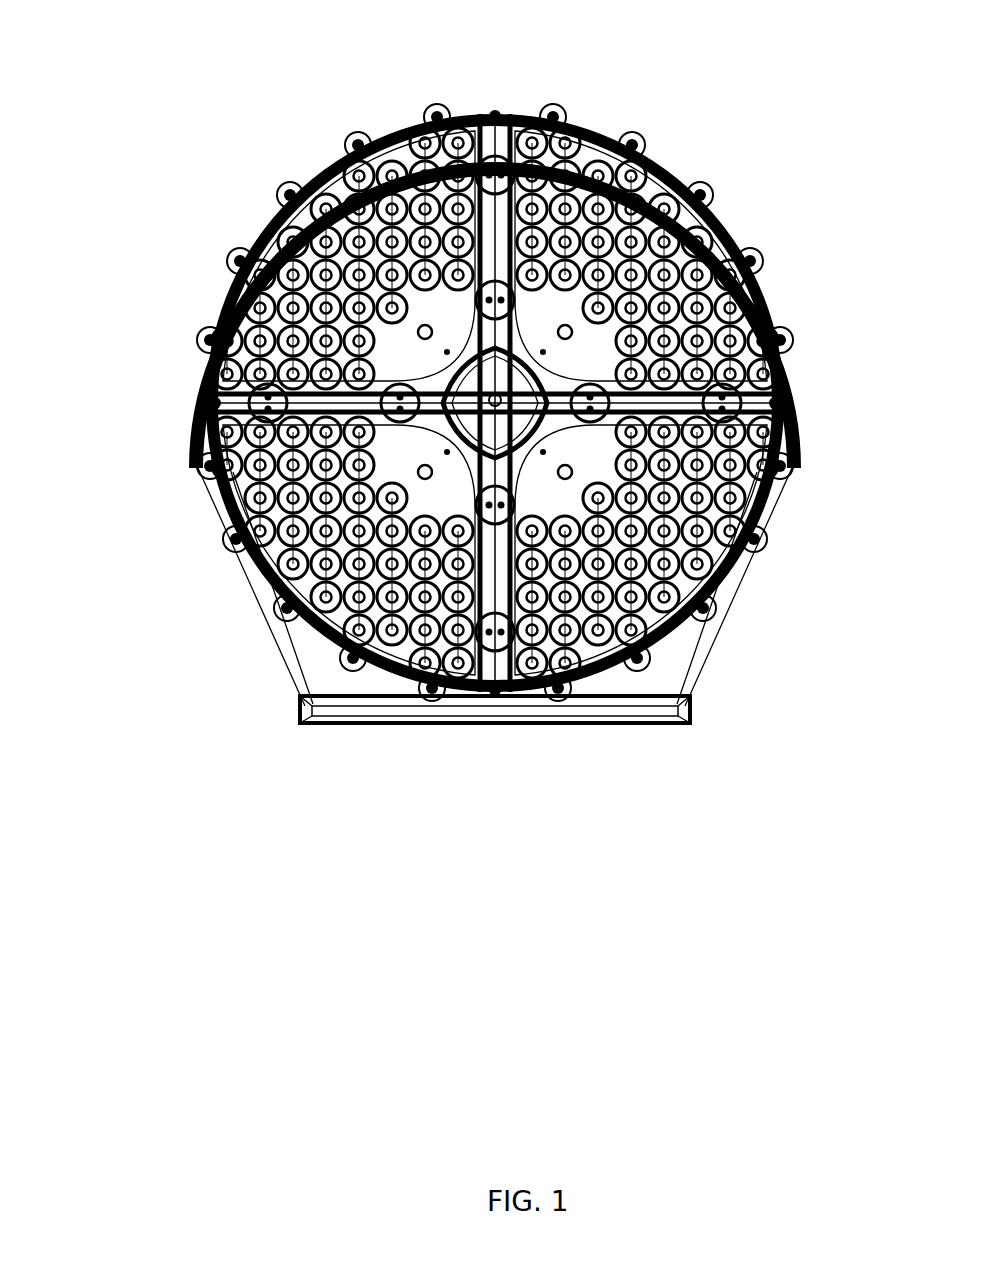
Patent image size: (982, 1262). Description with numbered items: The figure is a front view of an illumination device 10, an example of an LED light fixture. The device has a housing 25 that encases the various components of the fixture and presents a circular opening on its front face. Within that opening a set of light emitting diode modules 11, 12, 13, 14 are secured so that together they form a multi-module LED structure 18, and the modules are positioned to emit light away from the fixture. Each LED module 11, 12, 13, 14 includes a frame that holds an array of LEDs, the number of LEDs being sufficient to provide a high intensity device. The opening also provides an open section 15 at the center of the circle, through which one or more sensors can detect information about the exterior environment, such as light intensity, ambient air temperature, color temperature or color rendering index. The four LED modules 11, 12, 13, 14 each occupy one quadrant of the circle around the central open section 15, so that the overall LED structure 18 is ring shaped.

The illumination device 10 is at (193, 82).
The LED module 11 is at (290, 197).
The LED module 12 is at (625, 213).
The LED module 13 is at (303, 503).
The LED module 14 is at (700, 520).
The open section 15 is at (497, 397).
The multi-module LED structure 18 is at (553, 115).
The housing 25 is at (770, 270).